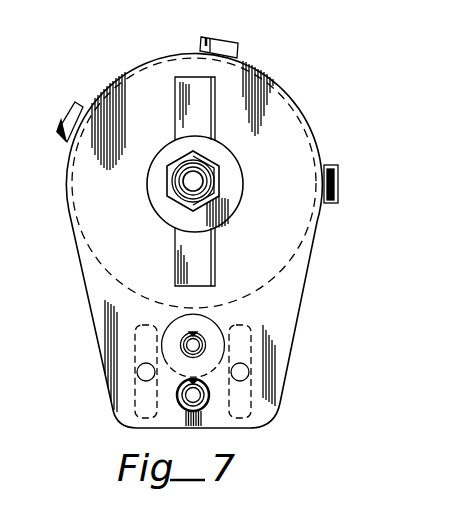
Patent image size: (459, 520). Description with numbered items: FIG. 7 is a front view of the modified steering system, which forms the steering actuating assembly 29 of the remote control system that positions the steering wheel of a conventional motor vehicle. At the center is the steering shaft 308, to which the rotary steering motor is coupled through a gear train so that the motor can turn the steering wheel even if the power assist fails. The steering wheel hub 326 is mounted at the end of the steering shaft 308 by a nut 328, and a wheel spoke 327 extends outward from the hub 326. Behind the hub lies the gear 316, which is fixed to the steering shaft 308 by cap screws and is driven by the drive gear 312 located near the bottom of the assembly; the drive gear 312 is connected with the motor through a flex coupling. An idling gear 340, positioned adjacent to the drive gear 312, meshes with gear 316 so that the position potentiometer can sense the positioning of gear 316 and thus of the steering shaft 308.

The actuating assembly for steering 29 is at (323, 97).
The steering shaft 308 is at (198, 182).
The nut 328 is at (220, 187).
The steering wheel hub 326 is at (224, 210).
The wheel spoke 327 is at (204, 261).
The gear 316 is at (93, 258).
The idling gear 340 is at (233, 320).
The drive gear 312 is at (207, 405).